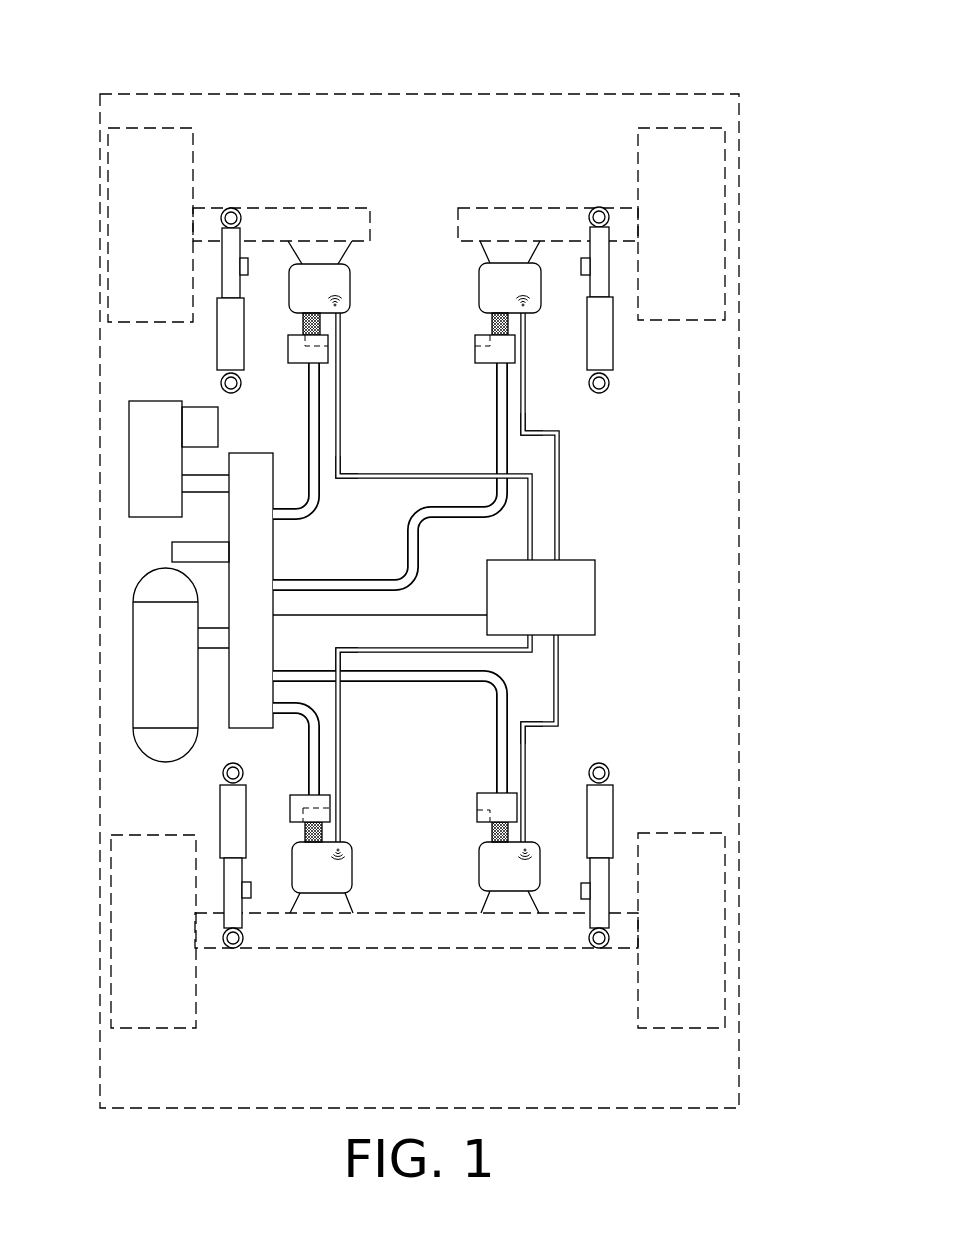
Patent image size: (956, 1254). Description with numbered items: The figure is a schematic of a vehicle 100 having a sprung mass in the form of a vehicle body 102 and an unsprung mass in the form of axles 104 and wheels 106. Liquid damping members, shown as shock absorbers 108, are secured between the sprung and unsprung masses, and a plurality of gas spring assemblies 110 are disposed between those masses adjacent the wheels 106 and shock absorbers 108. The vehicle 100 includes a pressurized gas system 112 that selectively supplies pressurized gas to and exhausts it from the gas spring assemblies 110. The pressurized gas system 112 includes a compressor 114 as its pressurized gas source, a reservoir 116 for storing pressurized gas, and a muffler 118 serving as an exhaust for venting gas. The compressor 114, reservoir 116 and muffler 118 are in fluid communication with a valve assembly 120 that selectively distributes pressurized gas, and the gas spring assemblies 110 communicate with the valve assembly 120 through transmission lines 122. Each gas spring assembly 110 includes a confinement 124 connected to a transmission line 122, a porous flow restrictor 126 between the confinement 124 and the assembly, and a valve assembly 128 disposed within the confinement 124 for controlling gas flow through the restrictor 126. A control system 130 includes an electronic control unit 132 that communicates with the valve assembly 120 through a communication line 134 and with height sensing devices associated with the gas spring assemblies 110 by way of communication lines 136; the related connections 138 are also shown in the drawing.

The vehicle 100 is at (762, 105).
The vehicle body 102 is at (537, 78).
The axles 104 is at (283, 207).
The wheels 106 is at (145, 240).
The shock absorbers 108 is at (216, 344).
The gas spring assemblies 110 is at (358, 289).
The pressurized gas system 112 is at (143, 555).
The compressor 114 is at (140, 461).
The reservoir 116 is at (145, 650).
The muffler 118 is at (172, 546).
The valve assembly 120 is at (275, 565).
The transmission lines 122 is at (306, 408).
The confinement 124 is at (298, 364).
The porous flow restrictor 126 is at (307, 316).
The valve assembly 128 is at (300, 337).
The control system 130 is at (623, 538).
The electronic control unit 132 is at (597, 597).
The communication line 134 is at (403, 613).
The communication lines 136 is at (420, 472).
The electrical connection 138 is at (410, 486).